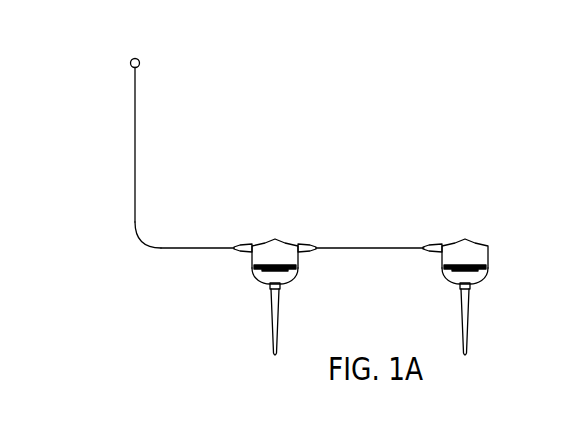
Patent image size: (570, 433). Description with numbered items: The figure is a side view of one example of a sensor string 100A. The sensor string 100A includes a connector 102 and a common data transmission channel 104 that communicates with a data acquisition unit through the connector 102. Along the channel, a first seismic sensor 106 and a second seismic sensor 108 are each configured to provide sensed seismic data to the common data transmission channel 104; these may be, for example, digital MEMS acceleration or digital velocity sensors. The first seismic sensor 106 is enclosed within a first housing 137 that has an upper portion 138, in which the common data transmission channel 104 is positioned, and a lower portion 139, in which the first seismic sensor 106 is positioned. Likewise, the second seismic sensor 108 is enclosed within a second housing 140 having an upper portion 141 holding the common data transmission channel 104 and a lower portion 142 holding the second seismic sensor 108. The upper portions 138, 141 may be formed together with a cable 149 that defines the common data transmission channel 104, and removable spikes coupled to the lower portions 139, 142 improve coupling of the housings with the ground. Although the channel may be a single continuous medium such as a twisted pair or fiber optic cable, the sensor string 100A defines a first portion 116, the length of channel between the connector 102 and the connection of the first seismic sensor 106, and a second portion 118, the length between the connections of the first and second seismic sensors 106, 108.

The sensor string 100A is at (460, 130).
The connector 102 is at (139, 62).
The common data transmission channel 104 is at (150, 143).
The first seismic sensor 106 is at (288, 261).
The second seismic sensor 108 is at (468, 260).
The first portion 116 is at (185, 264).
The second portion 118 is at (387, 265).
The first housing 137 is at (251, 222).
The upper portion 138 is at (313, 241).
The lower portion 139 is at (298, 285).
The second housing 140 is at (437, 228).
The upper portion 141 is at (497, 245).
The lower portion 142 is at (490, 284).
The cable 149 is at (143, 242).